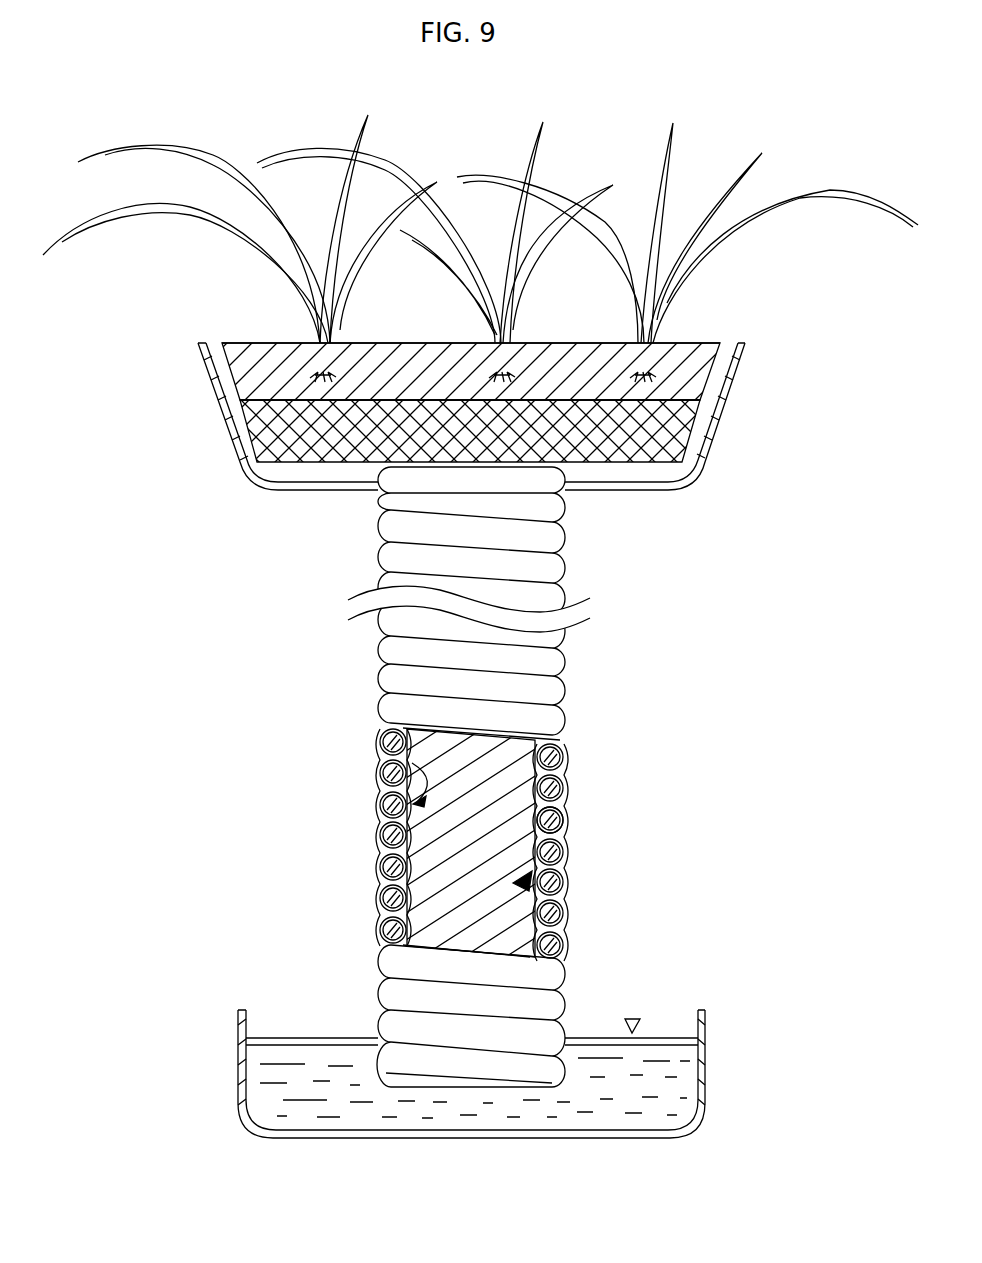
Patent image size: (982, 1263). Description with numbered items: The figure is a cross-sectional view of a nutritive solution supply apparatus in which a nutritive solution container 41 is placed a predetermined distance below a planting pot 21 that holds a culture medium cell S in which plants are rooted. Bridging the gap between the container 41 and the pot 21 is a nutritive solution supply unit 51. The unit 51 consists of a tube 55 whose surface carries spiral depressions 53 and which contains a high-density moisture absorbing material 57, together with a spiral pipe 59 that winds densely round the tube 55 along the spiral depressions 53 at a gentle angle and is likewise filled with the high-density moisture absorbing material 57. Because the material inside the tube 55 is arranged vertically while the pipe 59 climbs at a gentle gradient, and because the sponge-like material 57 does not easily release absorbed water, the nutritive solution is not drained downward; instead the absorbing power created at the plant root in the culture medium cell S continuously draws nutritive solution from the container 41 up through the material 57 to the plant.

The planting pot 21 is at (230, 431).
The culture medium cell S is at (665, 432).
The nutritive solution supply unit 51 is at (574, 571).
The spiral depressions / moisture absorbing material 53 is at (565, 900).
The tube 55 is at (386, 755).
The high-density moisture absorbing material 57 is at (565, 830).
The spiral pipe 59 is at (565, 757).
The nutritive solution container 41 is at (705, 1083).